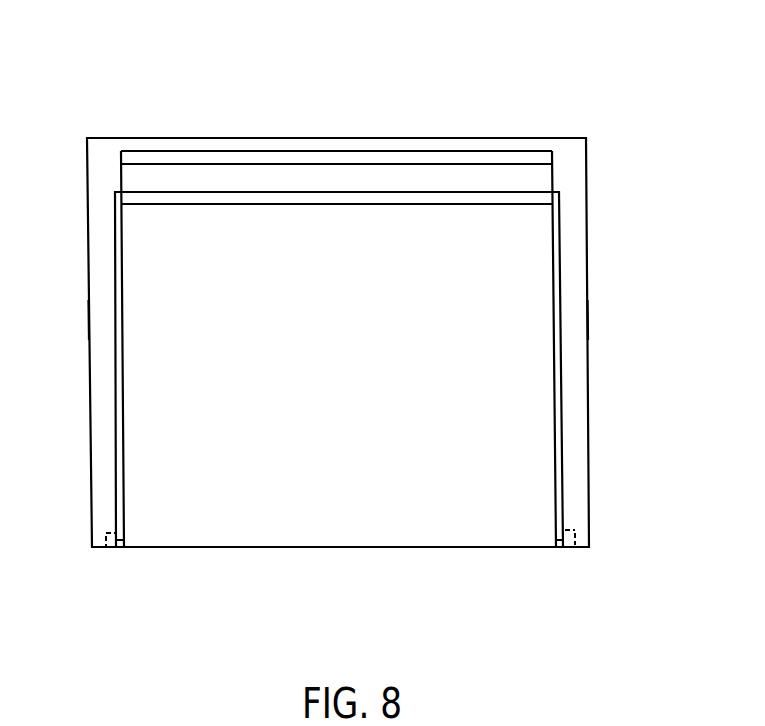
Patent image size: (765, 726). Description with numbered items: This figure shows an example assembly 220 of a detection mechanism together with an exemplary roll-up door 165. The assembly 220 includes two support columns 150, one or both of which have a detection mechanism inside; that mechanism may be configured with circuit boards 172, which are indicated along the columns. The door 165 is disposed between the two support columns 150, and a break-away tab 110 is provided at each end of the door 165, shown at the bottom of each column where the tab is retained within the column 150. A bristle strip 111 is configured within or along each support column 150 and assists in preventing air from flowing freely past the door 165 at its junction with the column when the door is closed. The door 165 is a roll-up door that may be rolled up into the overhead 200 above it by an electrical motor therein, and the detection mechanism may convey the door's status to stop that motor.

The assembly 220 is at (489, 67).
The overhead 200 is at (536, 150).
The support column 150 is at (110, 480).
The circuit boards 172 is at (107, 328).
The door 165 is at (528, 428).
The bristle strip 111 is at (120, 250).
The break-away tab 110 is at (109, 548).